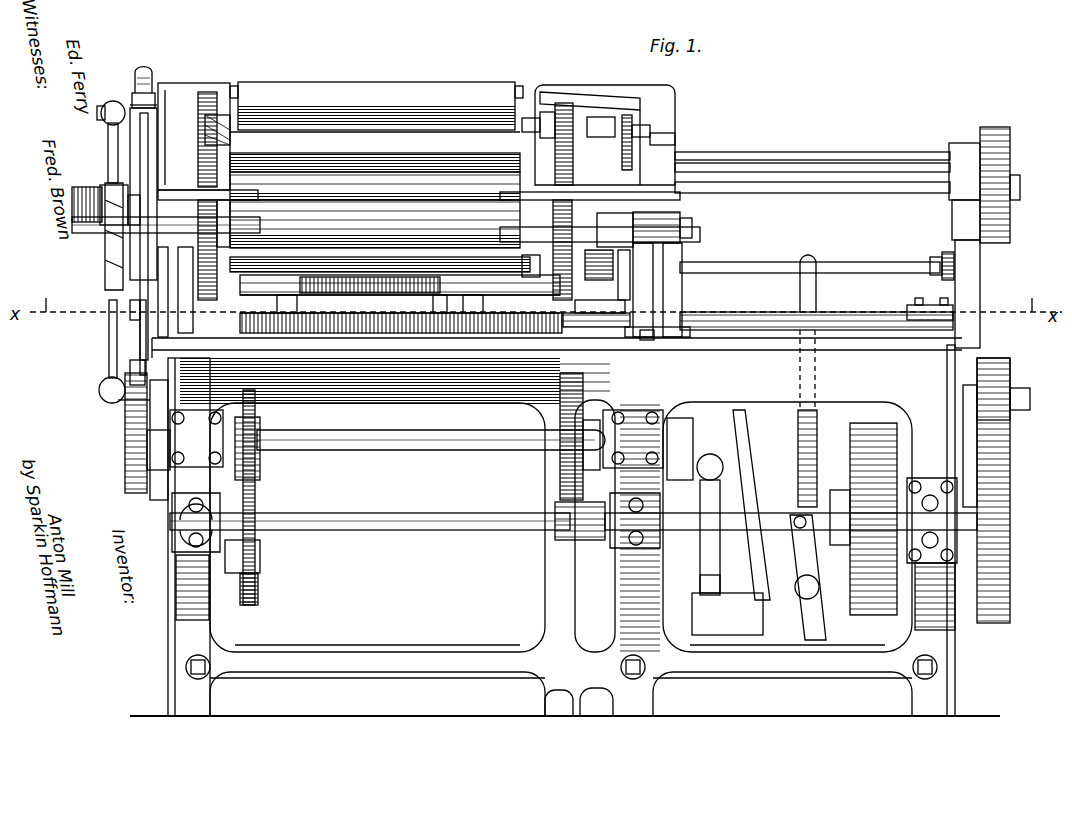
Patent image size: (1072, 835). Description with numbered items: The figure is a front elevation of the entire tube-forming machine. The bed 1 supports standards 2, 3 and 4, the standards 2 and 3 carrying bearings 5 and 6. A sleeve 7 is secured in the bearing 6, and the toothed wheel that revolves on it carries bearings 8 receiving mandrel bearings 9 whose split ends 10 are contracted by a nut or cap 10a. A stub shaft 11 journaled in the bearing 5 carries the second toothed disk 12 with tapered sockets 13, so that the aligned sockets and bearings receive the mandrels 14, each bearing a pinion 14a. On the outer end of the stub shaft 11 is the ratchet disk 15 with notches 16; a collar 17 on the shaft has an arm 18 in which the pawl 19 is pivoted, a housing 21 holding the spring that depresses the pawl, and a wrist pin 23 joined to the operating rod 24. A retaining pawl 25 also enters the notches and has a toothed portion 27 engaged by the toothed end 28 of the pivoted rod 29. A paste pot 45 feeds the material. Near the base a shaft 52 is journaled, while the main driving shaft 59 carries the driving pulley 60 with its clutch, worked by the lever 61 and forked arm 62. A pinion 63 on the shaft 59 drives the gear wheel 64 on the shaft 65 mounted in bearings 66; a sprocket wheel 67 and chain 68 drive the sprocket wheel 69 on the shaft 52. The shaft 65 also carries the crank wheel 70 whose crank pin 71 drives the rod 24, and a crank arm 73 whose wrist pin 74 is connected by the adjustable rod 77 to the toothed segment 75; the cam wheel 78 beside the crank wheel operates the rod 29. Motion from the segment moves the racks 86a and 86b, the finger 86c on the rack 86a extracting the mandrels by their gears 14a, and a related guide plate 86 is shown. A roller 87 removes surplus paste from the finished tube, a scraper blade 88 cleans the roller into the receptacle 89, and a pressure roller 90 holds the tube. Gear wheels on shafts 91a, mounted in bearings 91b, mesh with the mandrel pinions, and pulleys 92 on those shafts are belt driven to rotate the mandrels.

The bed of the machine 1 is at (930, 396).
The standard 2 is at (145, 330).
The standard 3 is at (684, 306).
The standard 4 is at (980, 300).
The bearing 5 is at (145, 238).
The bearing 6 is at (692, 226).
The sleeve 7 is at (578, 120).
The bearings 8 is at (607, 124).
The mandrel bearings 9 is at (600, 120).
The split ends 10 is at (533, 262).
The nut or cap 10a is at (534, 122).
The stub shaft 11 is at (74, 205).
The second disk or wheel 12 is at (218, 162).
The sockets or bearings 13 is at (233, 125).
The mandrels or cores 14 is at (306, 120).
The gear or pinion wheel 14a is at (940, 257).
The ratchet disk or wheel 15 is at (140, 205).
The notches or sockets 16 is at (147, 162).
The sleeve or collar 17 is at (140, 220).
The arm 18 is at (128, 158).
The pawl 19 is at (150, 105).
The housing 21 is at (143, 68).
The wrist pin 23 is at (106, 105).
The operating rod 24 is at (112, 165).
The retaining pawl 25 is at (180, 305).
The toothed portion 27 is at (140, 350).
The toothed end 28 is at (130, 370).
The operating rod 29 is at (110, 395).
The glue or paste pot 45 is at (407, 282).
The shaft 52 is at (402, 548).
The main driving shaft 59 is at (490, 545).
The driving pulley 60 is at (882, 590).
The operating lever 61 is at (815, 272).
The forked arm 62 is at (796, 605).
The pinion 63 is at (540, 548).
The gear wheel 64 is at (558, 468).
The shaft 65 is at (385, 438).
The bearings 66 is at (416, 439).
The sprocket wheel 67 is at (262, 486).
The sprocket chain 68 is at (262, 505).
The sprocket wheel 69 is at (258, 582).
The crank wheel 70 is at (128, 442).
The crank pin 71 is at (120, 400).
The crank arm 73 is at (702, 420).
The wrist pin 74 is at (722, 458).
The toothed segment 75 is at (752, 530).
The adjustable rod 77 is at (705, 565).
The cam wheel 78 is at (140, 492).
The table 86 is at (866, 328).
The rack 86a is at (640, 352).
The rack 86b is at (632, 288).
The upwardly extending finger 86c is at (935, 292).
The roller 87 is at (307, 162).
The scraper blade 88 is at (445, 180).
The receptacle 89 is at (360, 215).
The pressure roller 90 is at (400, 95).
The shafts 91a is at (838, 158).
The bearings 91b is at (760, 150).
The pulleys 92 is at (998, 226).